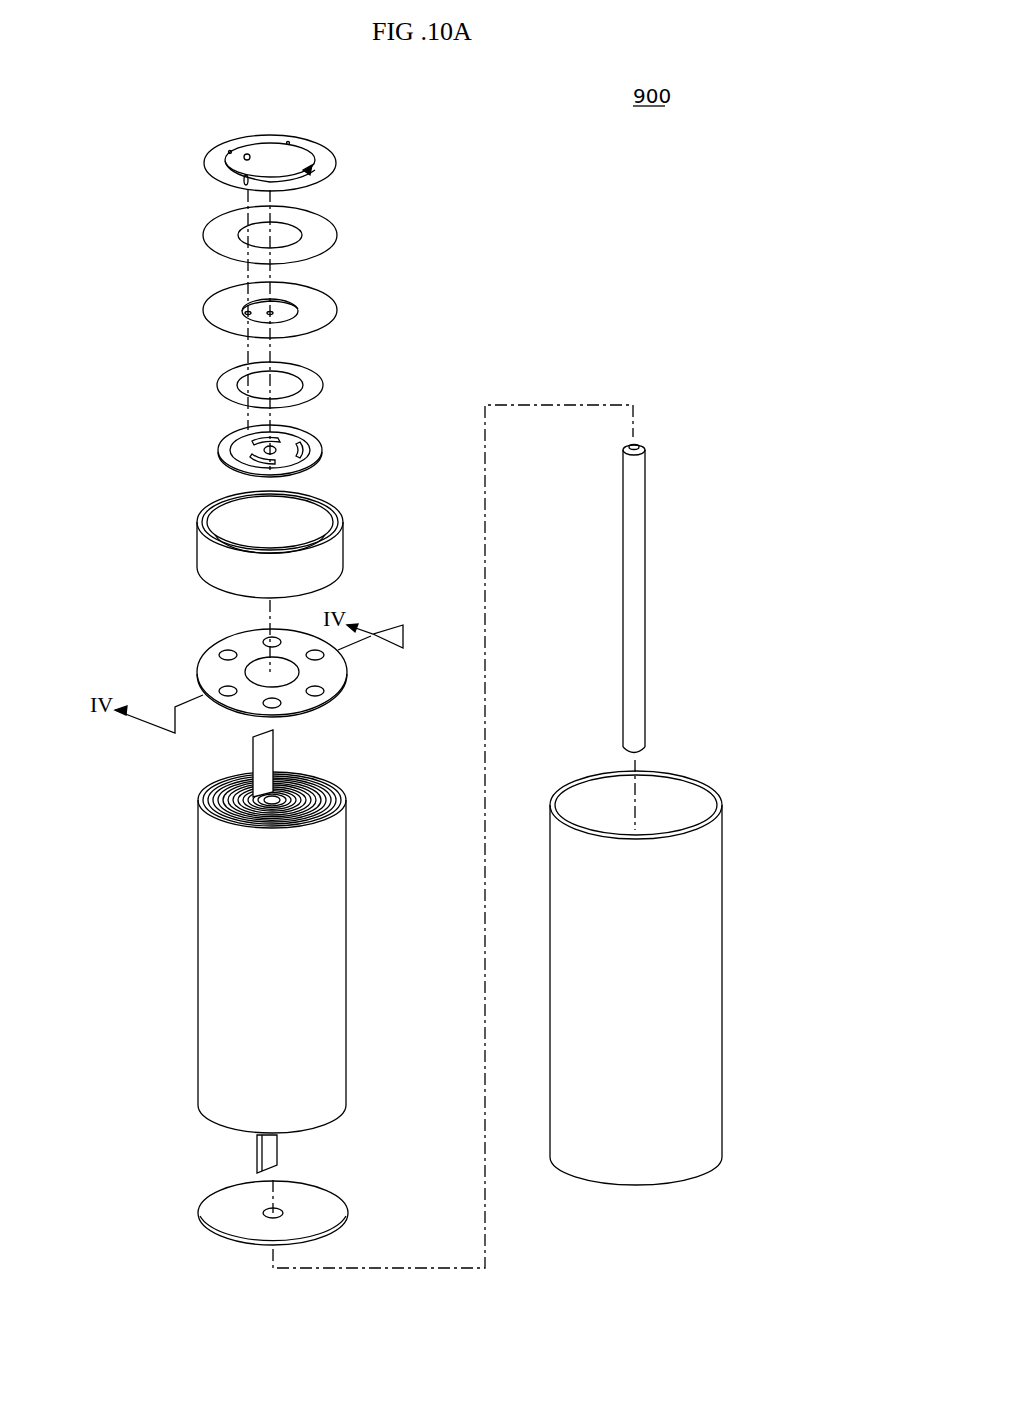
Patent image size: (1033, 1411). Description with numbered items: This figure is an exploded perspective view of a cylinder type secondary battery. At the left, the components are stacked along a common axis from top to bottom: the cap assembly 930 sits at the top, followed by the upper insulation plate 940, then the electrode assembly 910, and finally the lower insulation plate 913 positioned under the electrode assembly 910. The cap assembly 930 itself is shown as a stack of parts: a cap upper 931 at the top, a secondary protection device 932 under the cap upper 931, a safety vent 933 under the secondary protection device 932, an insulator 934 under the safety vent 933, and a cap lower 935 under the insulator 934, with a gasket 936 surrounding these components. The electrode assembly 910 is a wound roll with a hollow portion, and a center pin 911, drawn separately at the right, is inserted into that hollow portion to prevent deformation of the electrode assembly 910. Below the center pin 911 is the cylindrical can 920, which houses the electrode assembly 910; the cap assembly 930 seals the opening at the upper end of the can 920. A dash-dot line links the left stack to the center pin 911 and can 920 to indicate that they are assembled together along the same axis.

The electrode assembly 910 is at (192, 911).
The center pin 911 is at (636, 597).
The lower insulation plate 913 is at (215, 1192).
The cylindrical can 920 is at (712, 1074).
The cap assembly 930 is at (120, 155).
The cap upper 931 is at (213, 162).
The secondary protection device 932 is at (213, 237).
The safety vent 933 is at (212, 311).
The insulator 934 is at (223, 389).
The cap lower 935 is at (220, 452).
The gasket 936 is at (200, 531).
The upper insulation plate 940 is at (198, 651).